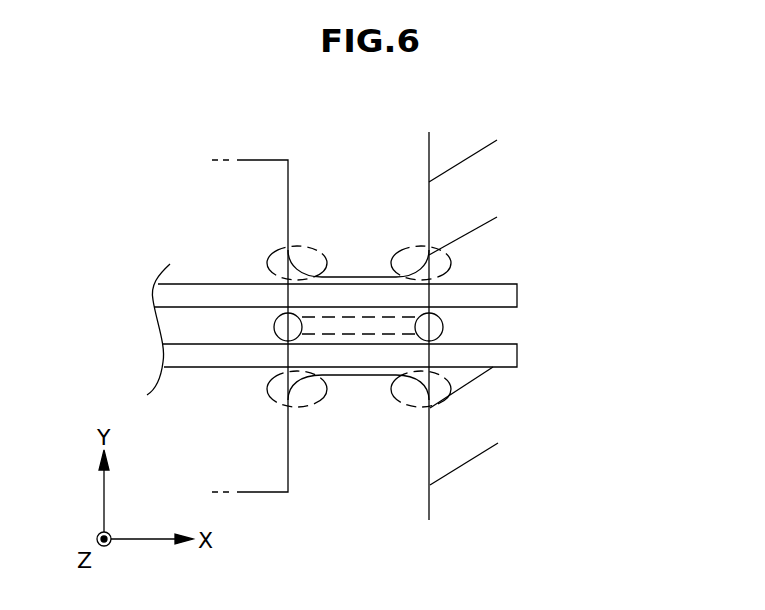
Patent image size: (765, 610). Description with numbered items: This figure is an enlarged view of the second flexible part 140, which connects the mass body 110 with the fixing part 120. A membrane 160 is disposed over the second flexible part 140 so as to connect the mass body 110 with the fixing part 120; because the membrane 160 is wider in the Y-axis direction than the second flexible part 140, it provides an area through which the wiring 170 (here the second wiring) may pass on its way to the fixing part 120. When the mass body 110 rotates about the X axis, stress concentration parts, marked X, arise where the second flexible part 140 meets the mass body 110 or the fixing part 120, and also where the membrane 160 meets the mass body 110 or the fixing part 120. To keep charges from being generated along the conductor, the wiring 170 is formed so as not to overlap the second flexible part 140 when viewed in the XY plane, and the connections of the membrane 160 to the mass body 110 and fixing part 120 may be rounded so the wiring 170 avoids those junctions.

The mass body 110 is at (258, 176).
The fixing part 120 is at (463, 193).
The second flexible part 140 is at (352, 324).
The membrane 160 is at (358, 280).
The wiring 170 is at (507, 293).